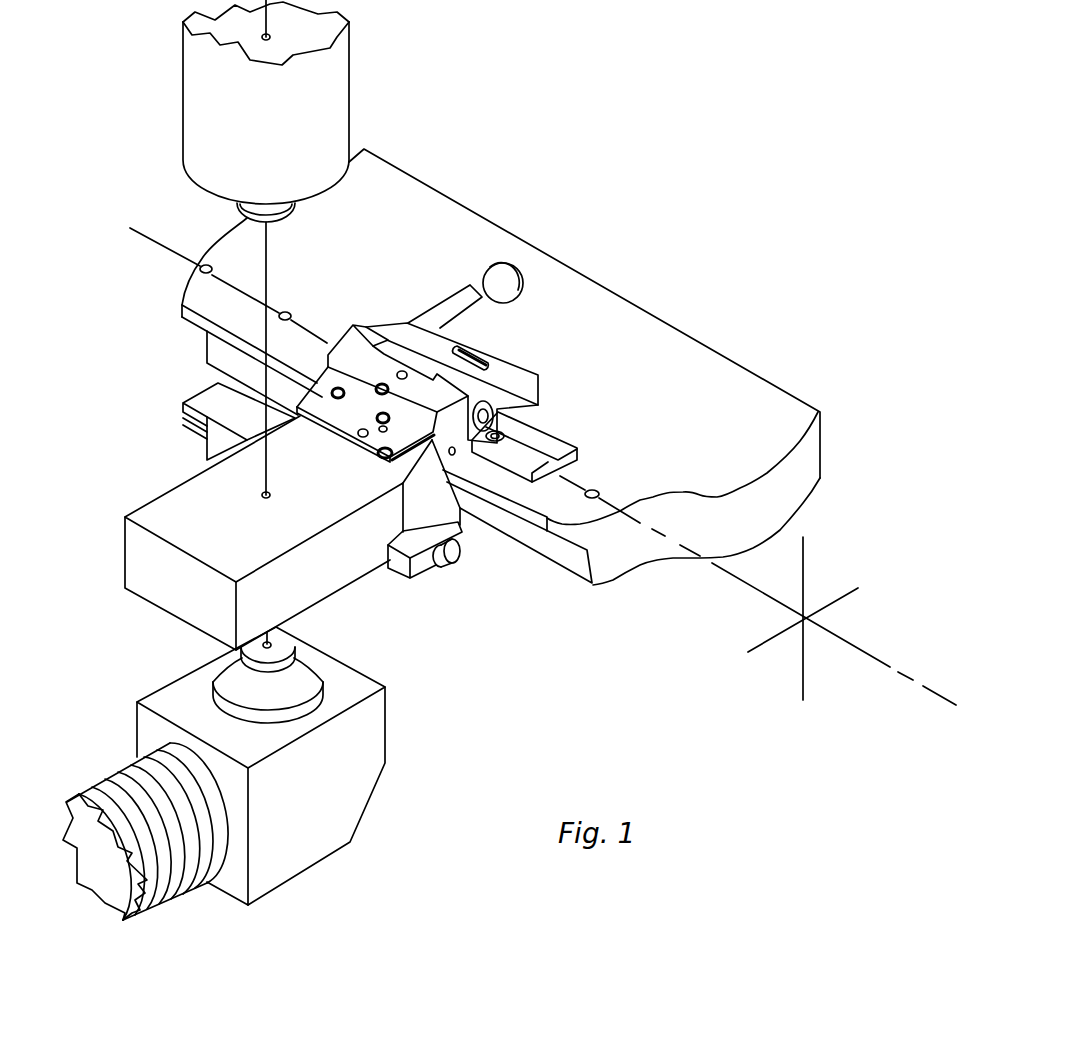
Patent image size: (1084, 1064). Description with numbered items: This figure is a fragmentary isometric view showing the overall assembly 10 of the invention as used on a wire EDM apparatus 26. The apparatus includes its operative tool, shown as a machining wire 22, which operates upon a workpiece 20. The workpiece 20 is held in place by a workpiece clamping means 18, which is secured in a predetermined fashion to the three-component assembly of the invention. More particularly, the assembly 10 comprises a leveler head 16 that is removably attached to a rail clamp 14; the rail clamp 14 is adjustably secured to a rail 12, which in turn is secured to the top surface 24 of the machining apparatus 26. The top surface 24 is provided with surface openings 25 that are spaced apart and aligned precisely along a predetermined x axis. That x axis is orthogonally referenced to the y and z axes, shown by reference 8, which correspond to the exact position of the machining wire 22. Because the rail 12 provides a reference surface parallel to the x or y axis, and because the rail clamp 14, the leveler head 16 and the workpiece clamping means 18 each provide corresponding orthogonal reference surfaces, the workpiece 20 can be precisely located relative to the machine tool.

The y and z axis reference 8 is at (886, 597).
The overall assembly 10 is at (389, 304).
The rail 12 is at (554, 430).
The rail clamp 14 is at (501, 359).
The leveler head 16 is at (326, 378).
The workpiece clamping means 18 is at (202, 389).
The workpiece 20 is at (177, 502).
The wire 22 is at (271, 486).
The top surface 24 is at (692, 395).
The surface openings 25 is at (210, 266).
The wire EDM apparatus 26 is at (178, 116).